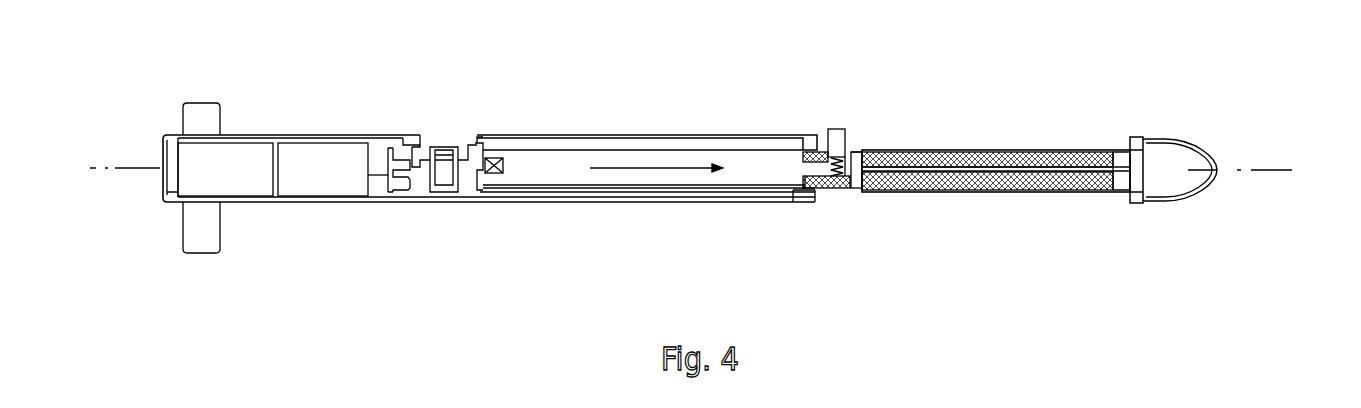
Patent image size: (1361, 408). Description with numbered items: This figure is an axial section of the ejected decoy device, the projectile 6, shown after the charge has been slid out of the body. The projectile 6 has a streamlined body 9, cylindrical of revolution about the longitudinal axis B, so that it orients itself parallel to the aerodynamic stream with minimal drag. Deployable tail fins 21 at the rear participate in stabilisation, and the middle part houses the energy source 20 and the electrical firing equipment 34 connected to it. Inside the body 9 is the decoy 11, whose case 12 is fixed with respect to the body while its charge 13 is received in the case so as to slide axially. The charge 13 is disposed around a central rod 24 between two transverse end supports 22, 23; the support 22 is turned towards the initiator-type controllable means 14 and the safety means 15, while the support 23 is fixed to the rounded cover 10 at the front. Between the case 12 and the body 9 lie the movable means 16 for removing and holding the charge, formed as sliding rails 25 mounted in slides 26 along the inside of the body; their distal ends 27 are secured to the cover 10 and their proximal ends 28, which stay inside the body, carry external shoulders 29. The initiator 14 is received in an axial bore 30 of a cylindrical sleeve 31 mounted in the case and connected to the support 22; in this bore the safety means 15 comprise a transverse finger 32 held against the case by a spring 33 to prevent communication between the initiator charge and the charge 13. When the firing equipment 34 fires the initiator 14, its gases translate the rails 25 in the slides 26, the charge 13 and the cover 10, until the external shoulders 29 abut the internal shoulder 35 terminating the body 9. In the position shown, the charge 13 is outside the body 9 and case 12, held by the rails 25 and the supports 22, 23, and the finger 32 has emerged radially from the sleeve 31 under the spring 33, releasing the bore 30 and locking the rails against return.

The projectile 6 is at (488, 116).
The streamlined body 9 is at (680, 135).
The rounded cover 10 is at (1195, 195).
The decoy 11 is at (862, 150).
The case 12 is at (578, 160).
The charge 13 is at (1005, 160).
The initiator-type controllable means 14 is at (508, 162).
The safety means 15 is at (835, 118).
The movable means for removing and holding the charge 16 is at (796, 177).
The energy source 20 is at (340, 210).
The deployable tail fins 21 is at (212, 221).
The transverse end support 22 is at (858, 183).
The transverse end support 23 is at (1127, 150).
The central rod 24 is at (1043, 170).
The sliding rails 25 is at (980, 192).
The slides 26 is at (663, 190).
The distal ends 27 is at (1125, 200).
The proximal ends 28 is at (795, 180).
The external shoulders 29 is at (793, 192).
The axial bore 30 is at (821, 168).
The cylindrical sleeve 31 is at (827, 182).
The transverse finger 32 is at (845, 140).
The spring 33 is at (838, 181).
The electrical firing equipment 34 is at (404, 202).
The internal shoulder 35 is at (813, 190).
The longitudinal axis B is at (1272, 170).